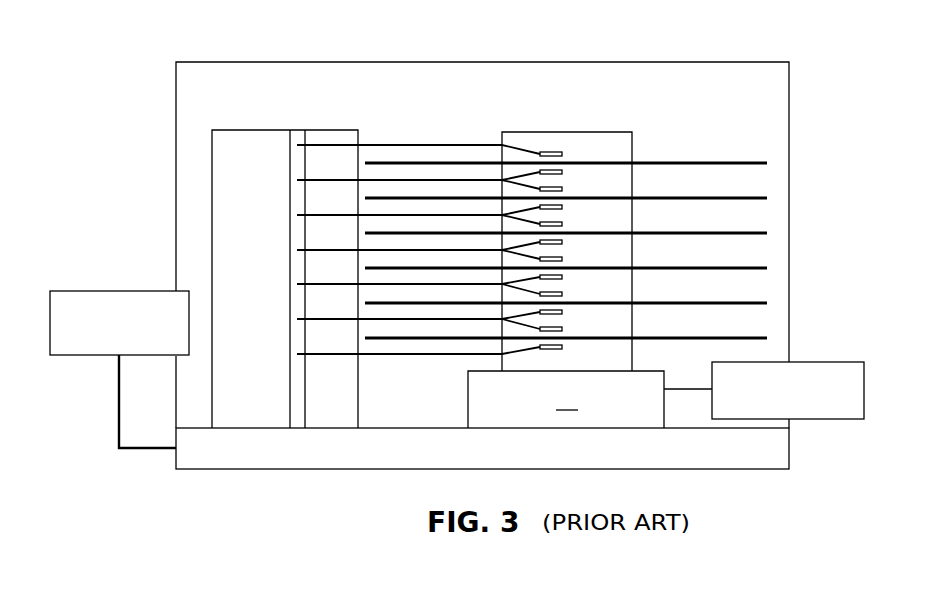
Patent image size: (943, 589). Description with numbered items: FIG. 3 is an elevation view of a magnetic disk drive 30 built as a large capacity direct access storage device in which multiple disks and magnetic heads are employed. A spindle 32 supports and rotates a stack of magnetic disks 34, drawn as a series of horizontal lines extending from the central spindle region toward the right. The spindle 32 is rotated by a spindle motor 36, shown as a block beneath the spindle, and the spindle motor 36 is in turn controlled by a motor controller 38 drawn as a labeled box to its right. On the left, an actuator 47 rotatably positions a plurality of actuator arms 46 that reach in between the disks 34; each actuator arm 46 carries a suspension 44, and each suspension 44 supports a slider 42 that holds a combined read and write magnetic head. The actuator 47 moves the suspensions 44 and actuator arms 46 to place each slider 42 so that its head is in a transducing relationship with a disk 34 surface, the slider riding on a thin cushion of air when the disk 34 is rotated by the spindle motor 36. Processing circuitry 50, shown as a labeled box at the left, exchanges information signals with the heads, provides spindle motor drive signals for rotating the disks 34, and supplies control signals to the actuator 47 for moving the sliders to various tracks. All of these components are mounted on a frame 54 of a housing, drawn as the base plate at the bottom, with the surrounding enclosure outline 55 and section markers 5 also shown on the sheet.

The section line 5- 5 is at (265, 14).
The magnetic disk drive 30 is at (680, 136).
The spindle 32 is at (622, 132).
The magnetic disk 34 is at (767, 163).
The spindle motor 36 is at (590, 399).
The motor controller 38 is at (822, 420).
The slider 42 is at (562, 172).
The suspension 44 is at (531, 178).
The actuator arm 46 is at (470, 180).
The actuator 47 is at (243, 130).
The processing circuitry 50 is at (91, 291).
The frame 54 is at (227, 469).
The housing 55 is at (700, 62).